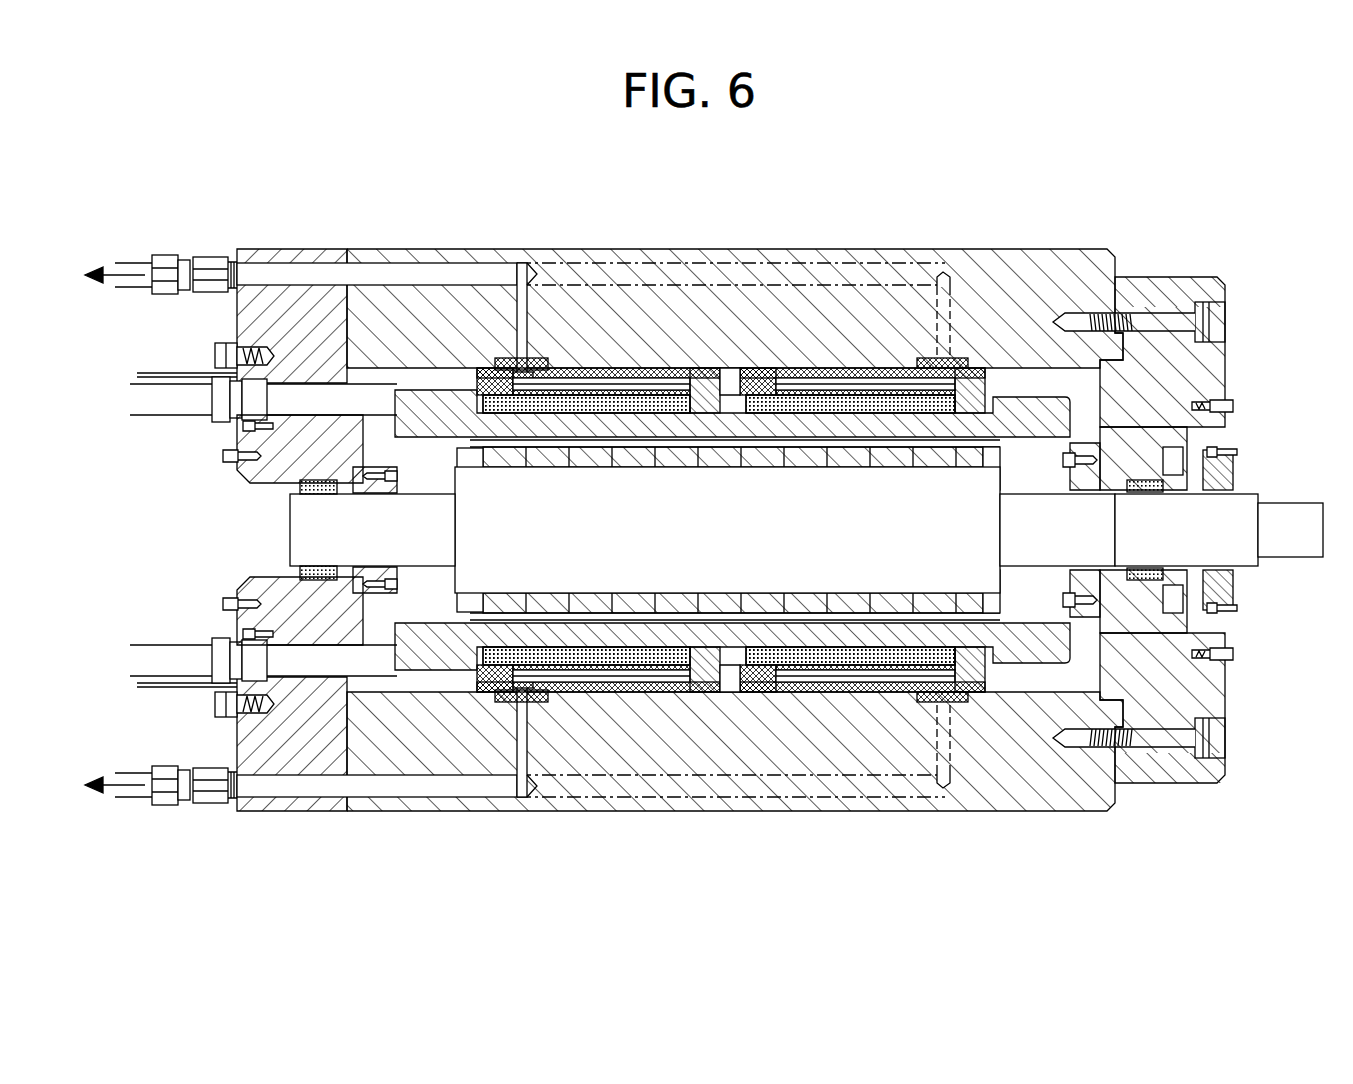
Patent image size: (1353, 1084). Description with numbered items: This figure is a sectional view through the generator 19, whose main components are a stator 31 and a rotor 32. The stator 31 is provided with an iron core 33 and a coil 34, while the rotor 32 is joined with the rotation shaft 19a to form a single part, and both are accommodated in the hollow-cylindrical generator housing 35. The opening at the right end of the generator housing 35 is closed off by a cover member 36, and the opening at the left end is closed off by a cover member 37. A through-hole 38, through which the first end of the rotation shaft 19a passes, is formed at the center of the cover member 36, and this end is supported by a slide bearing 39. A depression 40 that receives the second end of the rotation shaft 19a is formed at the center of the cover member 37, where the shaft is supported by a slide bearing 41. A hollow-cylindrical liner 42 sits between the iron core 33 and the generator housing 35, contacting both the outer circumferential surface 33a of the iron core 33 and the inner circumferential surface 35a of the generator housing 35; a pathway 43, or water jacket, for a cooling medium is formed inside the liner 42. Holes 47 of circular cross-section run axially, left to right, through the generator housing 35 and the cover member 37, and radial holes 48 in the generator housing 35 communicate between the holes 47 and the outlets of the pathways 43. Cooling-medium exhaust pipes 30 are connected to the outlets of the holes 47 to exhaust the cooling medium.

The generator 19 is at (1160, 222).
The rotation shaft 19a is at (1303, 503).
The cooling-medium exhaust pipe 30 is at (130, 265).
The stator 31 is at (540, 537).
The rotor 32 is at (978, 527).
The iron core 33 is at (620, 408).
The outer circumferential surface 33a is at (567, 392).
The coil 34 is at (555, 432).
The generator housing 35 is at (1042, 252).
The inner circumferential surface 35a is at (690, 372).
The cover member 36 is at (1228, 372).
The cover member 37 is at (300, 252).
The through-hole 38 is at (1222, 566).
The slide bearing 39 is at (1143, 494).
The depression 40 is at (270, 578).
The slide bearing 41 is at (322, 578).
The liner 42 is at (610, 372).
The pathway 43 is at (644, 380).
The hole 47 is at (403, 252).
The hole 48 is at (520, 265).